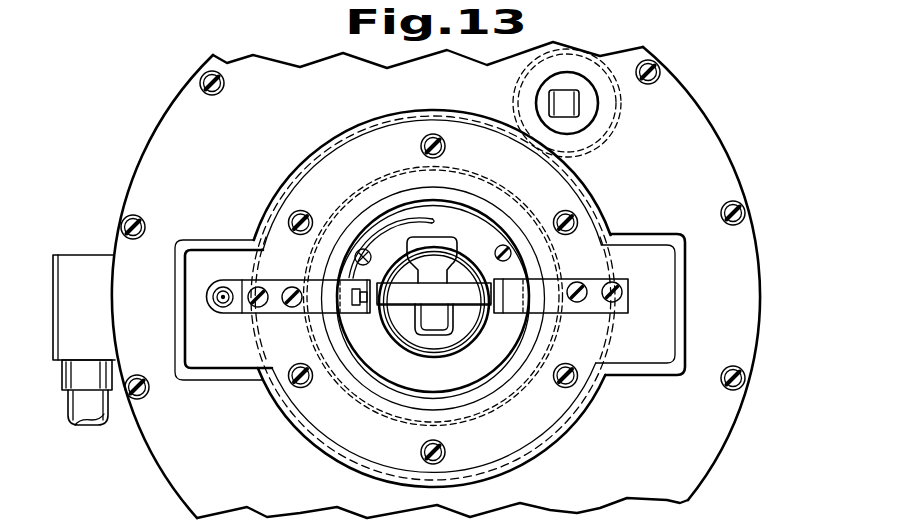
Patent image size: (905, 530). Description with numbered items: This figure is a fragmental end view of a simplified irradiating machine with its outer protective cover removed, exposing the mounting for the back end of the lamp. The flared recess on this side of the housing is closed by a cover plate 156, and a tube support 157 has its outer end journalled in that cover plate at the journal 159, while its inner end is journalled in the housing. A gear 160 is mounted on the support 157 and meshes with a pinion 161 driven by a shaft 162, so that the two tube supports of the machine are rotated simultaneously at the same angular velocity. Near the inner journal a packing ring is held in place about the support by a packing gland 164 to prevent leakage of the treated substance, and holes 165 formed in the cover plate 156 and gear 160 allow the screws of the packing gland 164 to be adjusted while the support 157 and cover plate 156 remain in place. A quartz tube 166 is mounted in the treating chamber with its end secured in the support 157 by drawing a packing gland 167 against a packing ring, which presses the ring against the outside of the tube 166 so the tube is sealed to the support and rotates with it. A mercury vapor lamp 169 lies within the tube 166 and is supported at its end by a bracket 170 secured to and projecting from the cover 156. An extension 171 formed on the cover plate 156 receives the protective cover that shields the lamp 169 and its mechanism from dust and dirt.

The cover plate 156 is at (728, 440).
The tube support 157 is at (504, 226).
The journal 159 is at (497, 207).
The gear 160 is at (578, 172).
The pinion 161 is at (612, 110).
The shaft 162 is at (574, 98).
The packing gland 164 is at (584, 402).
The holes 165 is at (290, 222).
The quartz tube 166 is at (385, 340).
The packing gland 167 is at (400, 343).
The mercury vapor lamp 169 is at (443, 247).
The bracket 170 is at (252, 252).
The extension 171 is at (642, 234).